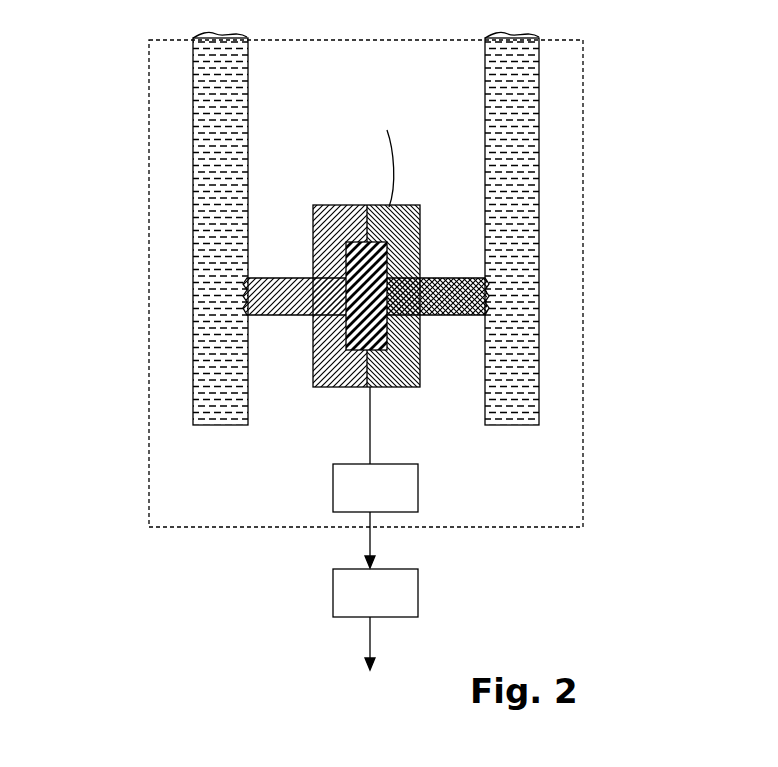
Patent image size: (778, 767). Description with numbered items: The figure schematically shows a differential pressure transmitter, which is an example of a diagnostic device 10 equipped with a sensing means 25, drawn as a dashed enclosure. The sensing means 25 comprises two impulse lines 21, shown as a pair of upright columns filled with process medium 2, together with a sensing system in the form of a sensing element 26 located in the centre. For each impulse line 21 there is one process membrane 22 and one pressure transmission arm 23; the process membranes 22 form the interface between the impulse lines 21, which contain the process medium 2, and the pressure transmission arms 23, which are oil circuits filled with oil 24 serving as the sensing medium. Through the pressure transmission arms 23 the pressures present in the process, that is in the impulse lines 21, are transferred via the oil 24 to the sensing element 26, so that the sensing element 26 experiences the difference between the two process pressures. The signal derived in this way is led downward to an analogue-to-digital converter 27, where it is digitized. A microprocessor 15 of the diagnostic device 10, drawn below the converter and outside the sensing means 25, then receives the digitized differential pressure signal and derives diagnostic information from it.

The diagnostic device 10 is at (62, 39).
The sensing means 25 is at (149, 90).
The impulse line 21 is at (210, 143).
The process medium 2 is at (205, 209).
The process membrane 22 is at (243, 300).
The pressure transmission arm 23 is at (317, 328).
The oil 24 is at (318, 368).
The sensing element 26 is at (358, 211).
The analogue-to-digital converter 27 is at (418, 488).
The microprocessor 15 is at (418, 590).